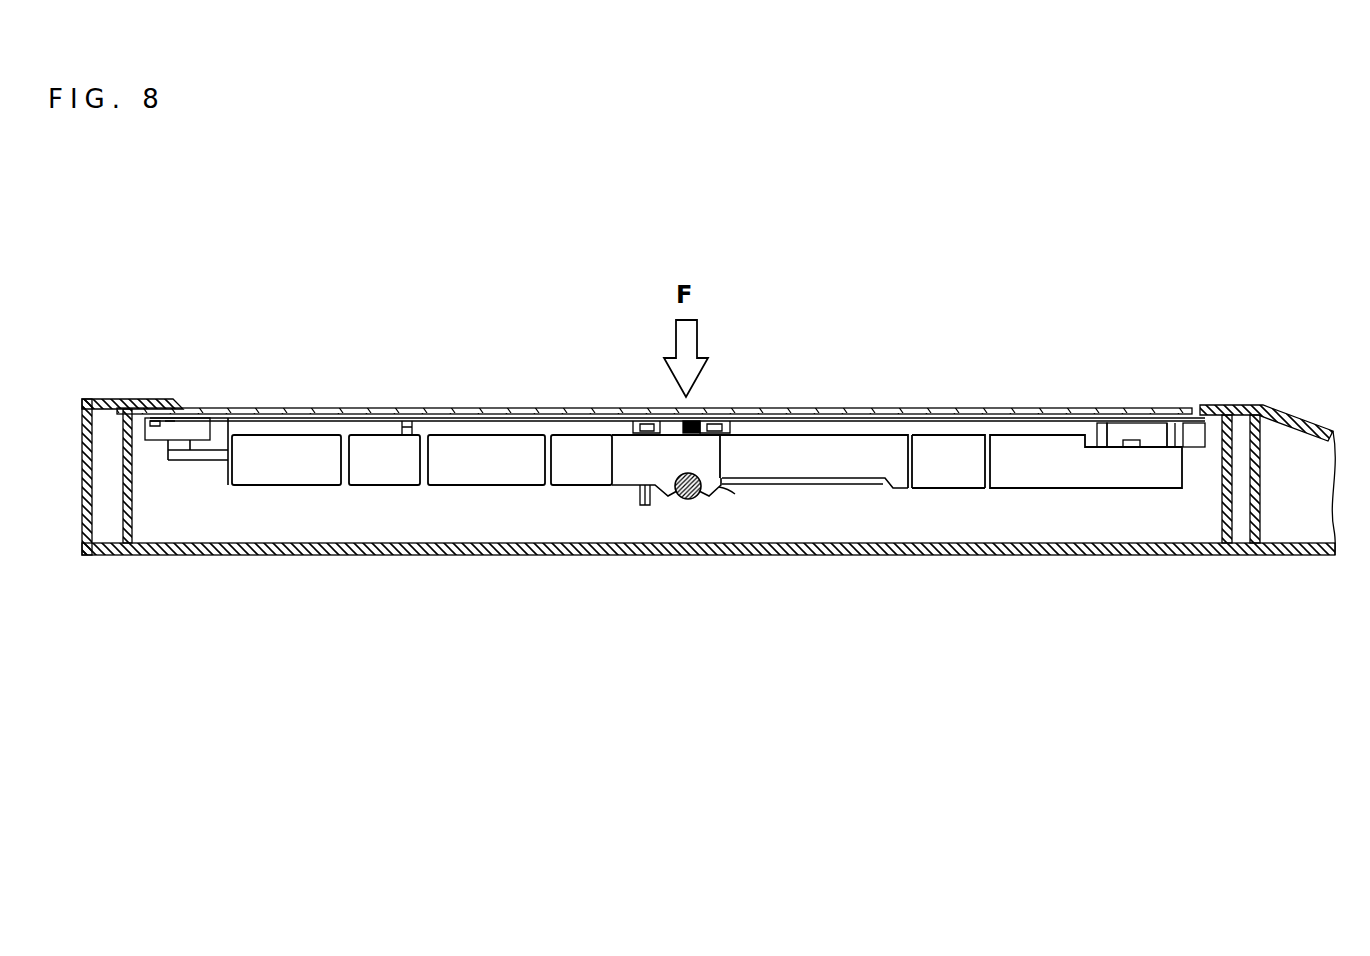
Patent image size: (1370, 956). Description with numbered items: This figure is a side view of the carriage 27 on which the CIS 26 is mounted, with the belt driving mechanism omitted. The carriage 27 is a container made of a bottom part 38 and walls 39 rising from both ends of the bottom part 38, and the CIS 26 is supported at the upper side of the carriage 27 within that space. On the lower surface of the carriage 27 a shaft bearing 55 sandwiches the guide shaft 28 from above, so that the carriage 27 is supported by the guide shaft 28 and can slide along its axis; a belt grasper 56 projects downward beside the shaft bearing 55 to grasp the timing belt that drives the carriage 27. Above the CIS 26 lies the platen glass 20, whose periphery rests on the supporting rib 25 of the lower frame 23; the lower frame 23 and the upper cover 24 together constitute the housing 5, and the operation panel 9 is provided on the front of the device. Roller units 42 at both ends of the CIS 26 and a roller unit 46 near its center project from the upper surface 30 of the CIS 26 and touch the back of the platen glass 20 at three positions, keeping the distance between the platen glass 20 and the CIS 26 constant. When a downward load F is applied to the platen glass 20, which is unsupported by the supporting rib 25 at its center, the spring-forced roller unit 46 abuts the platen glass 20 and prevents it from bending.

The housing 5 is at (290, 627).
The operation panel 9 is at (1315, 385).
The platen glass 20 is at (540, 408).
The lower frame 23 is at (427, 556).
The upper cover 24 is at (118, 400).
The supporting rib 25 is at (132, 505).
The CIS 26 is at (943, 391).
The carriage 27 is at (1043, 518).
The guide shaft 28 is at (695, 496).
The upper surface 30 is at (810, 420).
The bottom part 38 is at (500, 487).
The wall 39 is at (885, 480).
The roller unit 42 is at (157, 386).
The roller unit 46 is at (414, 385).
The shaft bearing 55 is at (735, 494).
The belt grasper 56 is at (640, 503).